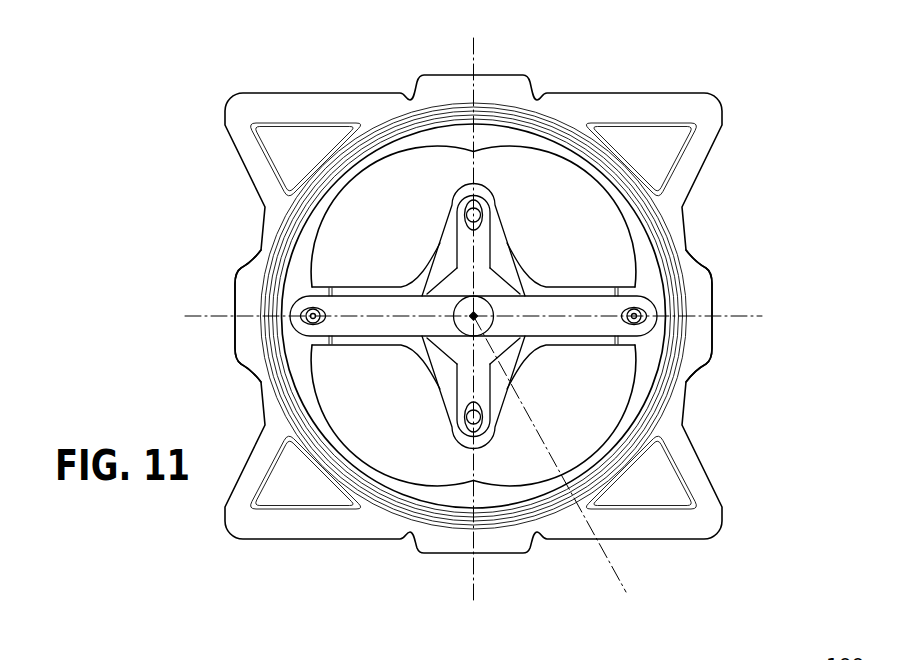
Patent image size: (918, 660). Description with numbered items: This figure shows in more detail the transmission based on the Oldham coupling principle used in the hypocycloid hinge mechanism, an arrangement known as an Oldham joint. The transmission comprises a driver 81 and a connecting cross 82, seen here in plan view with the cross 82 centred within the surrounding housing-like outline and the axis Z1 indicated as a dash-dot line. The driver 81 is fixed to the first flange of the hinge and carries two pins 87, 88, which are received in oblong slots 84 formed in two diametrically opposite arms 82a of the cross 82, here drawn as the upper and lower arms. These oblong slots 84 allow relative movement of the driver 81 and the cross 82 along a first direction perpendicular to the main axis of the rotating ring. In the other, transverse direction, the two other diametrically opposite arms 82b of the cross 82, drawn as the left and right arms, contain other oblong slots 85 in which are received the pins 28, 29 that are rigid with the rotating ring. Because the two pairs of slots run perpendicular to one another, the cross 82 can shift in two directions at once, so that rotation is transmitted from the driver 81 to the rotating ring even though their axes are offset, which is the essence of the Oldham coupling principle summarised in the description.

The pin 28 is at (643, 312).
The pin 29 is at (308, 311).
The driver 81 is at (505, 208).
The connecting cross 82 is at (585, 295).
The diametrically opposite arms 82a is at (462, 212).
The other diametrically opposite arms 82b is at (362, 296).
The oblong slots 84 is at (480, 213).
The other oblong slots 85 is at (314, 317).
The pin 87 is at (486, 418).
The pin 88 is at (471, 208).
The axis Z1 is at (553, 468).